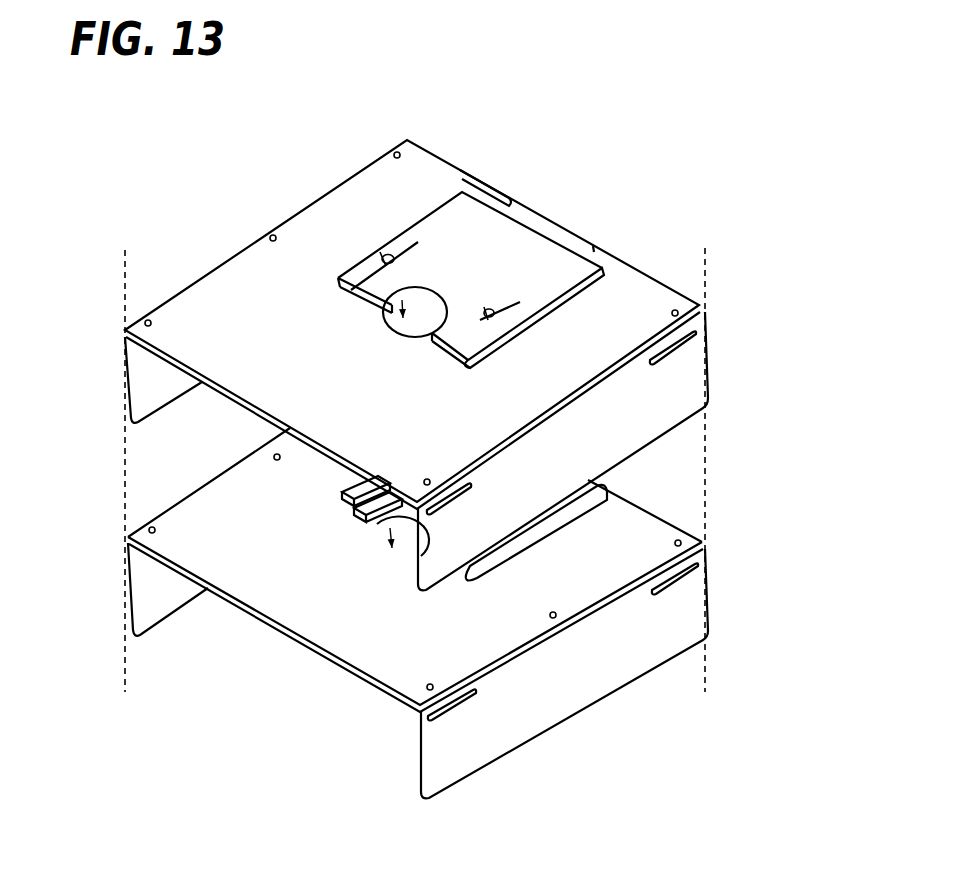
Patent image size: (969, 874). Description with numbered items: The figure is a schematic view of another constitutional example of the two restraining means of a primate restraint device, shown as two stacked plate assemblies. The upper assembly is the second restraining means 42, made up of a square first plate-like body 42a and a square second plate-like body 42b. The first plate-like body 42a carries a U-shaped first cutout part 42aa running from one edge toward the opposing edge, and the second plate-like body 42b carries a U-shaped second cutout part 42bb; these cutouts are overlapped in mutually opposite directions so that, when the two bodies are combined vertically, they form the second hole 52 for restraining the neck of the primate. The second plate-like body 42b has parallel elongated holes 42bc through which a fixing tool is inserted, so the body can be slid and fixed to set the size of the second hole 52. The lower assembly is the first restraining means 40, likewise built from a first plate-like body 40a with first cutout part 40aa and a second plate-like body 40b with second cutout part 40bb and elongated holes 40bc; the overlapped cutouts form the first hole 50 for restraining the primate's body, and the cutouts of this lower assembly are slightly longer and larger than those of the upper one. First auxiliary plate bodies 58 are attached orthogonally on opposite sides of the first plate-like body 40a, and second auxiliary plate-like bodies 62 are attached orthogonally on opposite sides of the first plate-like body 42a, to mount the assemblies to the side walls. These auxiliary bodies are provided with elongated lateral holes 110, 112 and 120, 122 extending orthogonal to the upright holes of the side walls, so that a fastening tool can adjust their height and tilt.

The first restraining means 40 is at (468, 573).
The first plate-like body 40a is at (640, 583).
The second plate-like body 40b is at (633, 543).
The first cutout part 40aa is at (614, 477).
The second cutout part 40bb is at (417, 516).
The elongated holes 40bc is at (348, 516).
The second restraining means 42 is at (455, 451).
The first plate-like body 42a is at (631, 305).
The second plate-like body 42b is at (557, 262).
The first cutout part 42aa is at (541, 212).
The second cutout part 42bb is at (437, 303).
The elongated holes 42bc is at (516, 298).
The first hole 50 is at (410, 508).
The second hole 52 is at (403, 316).
The first auxiliary plate body 58 is at (160, 600).
The second auxiliary plate-like body 62 is at (667, 405).
The elongated lateral hole 110 is at (695, 331).
The elongated lateral hole 112 is at (473, 490).
The elongated lateral hole 120 is at (700, 566).
The elongated lateral hole 122 is at (430, 718).